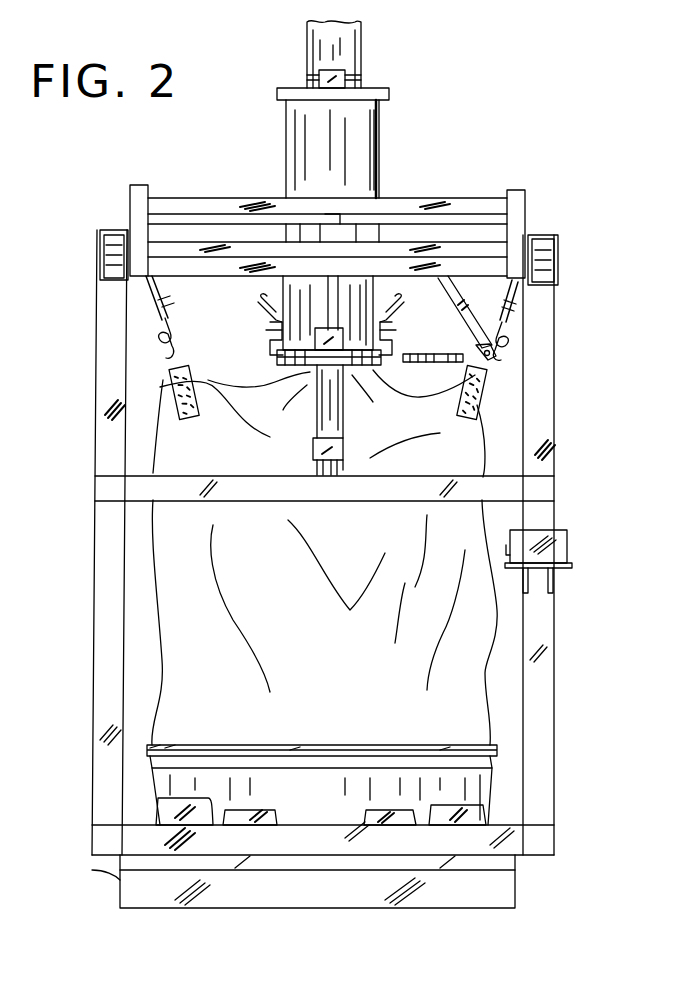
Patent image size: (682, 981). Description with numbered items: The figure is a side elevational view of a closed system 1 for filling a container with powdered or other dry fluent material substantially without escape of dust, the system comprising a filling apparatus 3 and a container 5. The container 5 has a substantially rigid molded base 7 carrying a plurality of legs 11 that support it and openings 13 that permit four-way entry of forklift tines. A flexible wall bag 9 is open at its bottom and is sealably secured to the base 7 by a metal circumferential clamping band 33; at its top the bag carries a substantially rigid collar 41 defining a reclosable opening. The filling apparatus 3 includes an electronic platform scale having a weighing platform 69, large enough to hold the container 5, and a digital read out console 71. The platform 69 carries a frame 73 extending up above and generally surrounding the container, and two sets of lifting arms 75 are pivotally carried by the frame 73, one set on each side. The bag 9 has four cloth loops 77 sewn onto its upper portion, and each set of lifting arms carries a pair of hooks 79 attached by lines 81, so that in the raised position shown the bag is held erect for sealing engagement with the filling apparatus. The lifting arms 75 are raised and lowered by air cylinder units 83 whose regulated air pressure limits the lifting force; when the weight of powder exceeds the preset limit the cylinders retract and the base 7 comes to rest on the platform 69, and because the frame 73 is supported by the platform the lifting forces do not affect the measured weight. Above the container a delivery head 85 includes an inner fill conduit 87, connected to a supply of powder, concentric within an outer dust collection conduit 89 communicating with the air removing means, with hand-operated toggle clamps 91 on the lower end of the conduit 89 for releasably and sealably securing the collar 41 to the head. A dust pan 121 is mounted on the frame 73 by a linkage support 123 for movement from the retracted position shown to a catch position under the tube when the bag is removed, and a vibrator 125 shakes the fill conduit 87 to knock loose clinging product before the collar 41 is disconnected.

The closed system 1 is at (66, 272).
The filling apparatus 3 is at (402, 148).
The container 5 is at (132, 614).
The base 7 is at (505, 782).
The flexible wall bag 9 is at (487, 648).
The legs 11 is at (470, 820).
The openings 13 is at (384, 822).
The clamping band 33 is at (500, 750).
The collar 41 is at (412, 393).
The weighing platform 69 is at (120, 857).
The digital read out console 71 is at (568, 545).
The frame 73 is at (556, 454).
The lifting arms 75 is at (528, 222).
The cloth loops 77 is at (185, 362).
The hooks 79 is at (165, 340).
The lines 81 is at (152, 300).
The air cylinder units 83 is at (343, 420).
The delivery head 85 is at (282, 163).
The fill conduit 87 is at (360, 52).
The dust collection conduit 89 is at (380, 186).
The toggle clamps 91 is at (258, 330).
The dust pan 121 is at (415, 324).
The linkage support 123 is at (526, 222).
The vibrator 125 is at (365, 68).